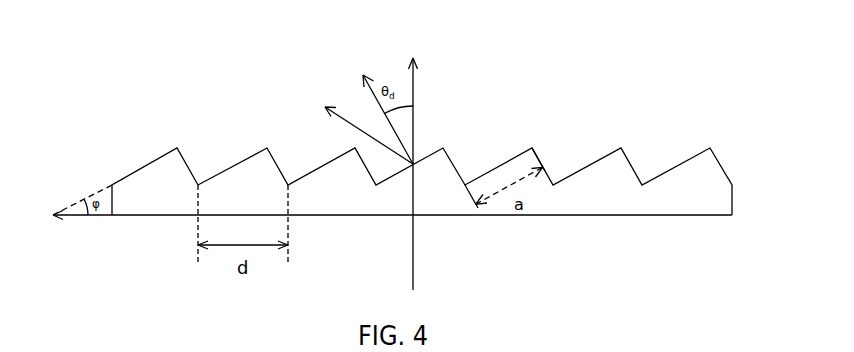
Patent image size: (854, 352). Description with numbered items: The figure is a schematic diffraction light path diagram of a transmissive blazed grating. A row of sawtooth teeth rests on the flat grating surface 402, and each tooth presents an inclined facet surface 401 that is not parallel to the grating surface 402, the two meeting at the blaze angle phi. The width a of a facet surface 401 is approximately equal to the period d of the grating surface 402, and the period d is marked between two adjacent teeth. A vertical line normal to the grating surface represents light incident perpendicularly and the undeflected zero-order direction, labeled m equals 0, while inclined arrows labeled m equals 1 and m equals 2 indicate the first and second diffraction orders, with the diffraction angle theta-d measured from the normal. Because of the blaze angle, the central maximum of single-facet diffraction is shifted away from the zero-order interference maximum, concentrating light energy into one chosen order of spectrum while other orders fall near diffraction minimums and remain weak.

The facet surface 401 is at (140, 169).
The grating surface 402 is at (698, 216).
The zeroth diffraction order (m=0) direction / grating normal 0 is at (433, 168).
The first diffraction order (m=1) direction 1 is at (374, 105).
The second diffraction order (m=2) direction 2 is at (346, 125).